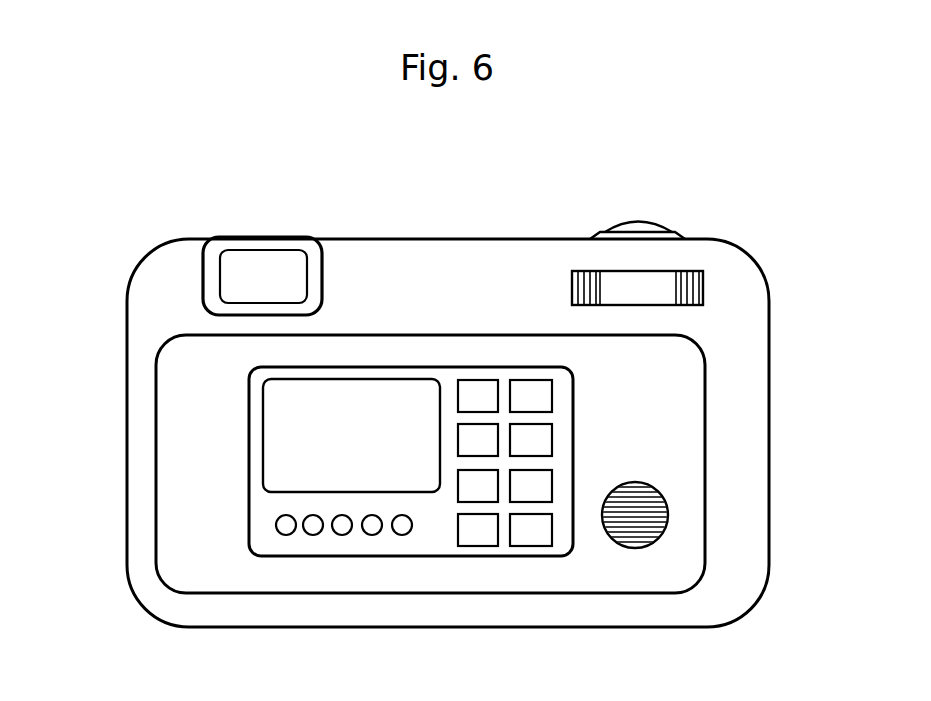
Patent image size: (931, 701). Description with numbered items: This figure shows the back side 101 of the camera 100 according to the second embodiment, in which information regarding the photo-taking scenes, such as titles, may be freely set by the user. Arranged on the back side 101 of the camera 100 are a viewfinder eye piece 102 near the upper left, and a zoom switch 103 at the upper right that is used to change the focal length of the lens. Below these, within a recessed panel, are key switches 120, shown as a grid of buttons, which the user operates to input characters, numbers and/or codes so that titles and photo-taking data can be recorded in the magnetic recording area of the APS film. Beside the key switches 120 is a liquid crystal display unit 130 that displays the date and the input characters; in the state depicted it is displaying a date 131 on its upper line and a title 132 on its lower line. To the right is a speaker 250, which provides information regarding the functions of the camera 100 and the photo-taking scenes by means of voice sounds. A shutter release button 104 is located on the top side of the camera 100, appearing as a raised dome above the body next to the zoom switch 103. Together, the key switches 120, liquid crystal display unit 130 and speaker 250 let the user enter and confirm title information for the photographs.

The camera 100 is at (512, 228).
The back side 101 is at (407, 278).
The viewfinder eye piece 102 is at (270, 267).
The zoom switch 103 is at (633, 293).
The shutter release button 104 is at (640, 223).
The key switches 120 is at (472, 546).
The liquid crystal display unit 130 is at (397, 480).
The date 131 is at (267, 413).
The title 132 is at (267, 460).
The speaker 250 is at (635, 548).